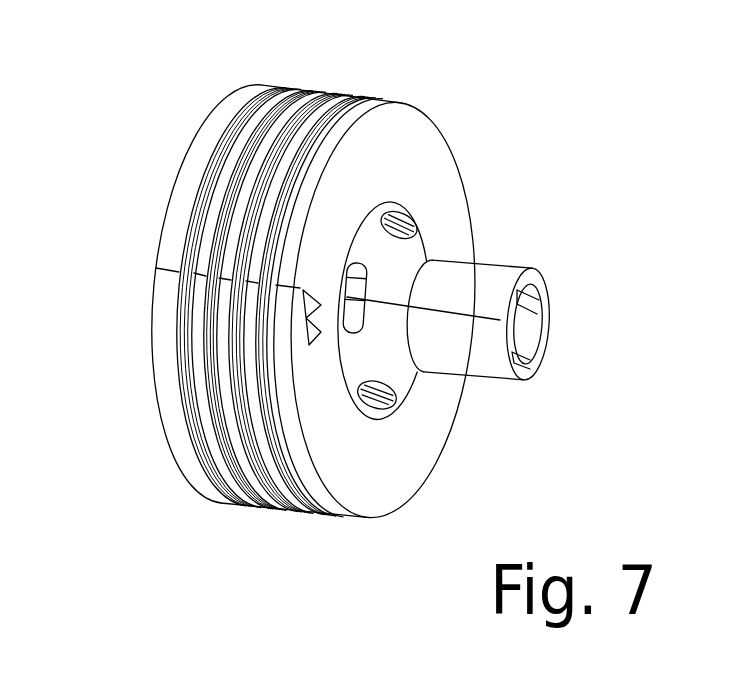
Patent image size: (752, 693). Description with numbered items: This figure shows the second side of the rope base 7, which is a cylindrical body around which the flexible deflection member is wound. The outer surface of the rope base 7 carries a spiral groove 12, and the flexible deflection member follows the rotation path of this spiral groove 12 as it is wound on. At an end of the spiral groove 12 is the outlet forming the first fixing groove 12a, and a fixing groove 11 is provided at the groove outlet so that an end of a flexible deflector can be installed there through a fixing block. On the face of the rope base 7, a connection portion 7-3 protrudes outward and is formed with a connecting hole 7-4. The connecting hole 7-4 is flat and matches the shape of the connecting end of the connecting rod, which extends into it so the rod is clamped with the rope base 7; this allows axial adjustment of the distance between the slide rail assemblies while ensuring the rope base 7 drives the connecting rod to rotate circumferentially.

The rope base 7 is at (417, 147).
The connection portion 7-3 is at (480, 277).
The connecting hole 7-4 is at (527, 330).
The fixing groove 11 is at (317, 330).
The spiral groove 12 is at (180, 323).
The first fixing groove (outlet of the spiral groove) 12a is at (293, 268).